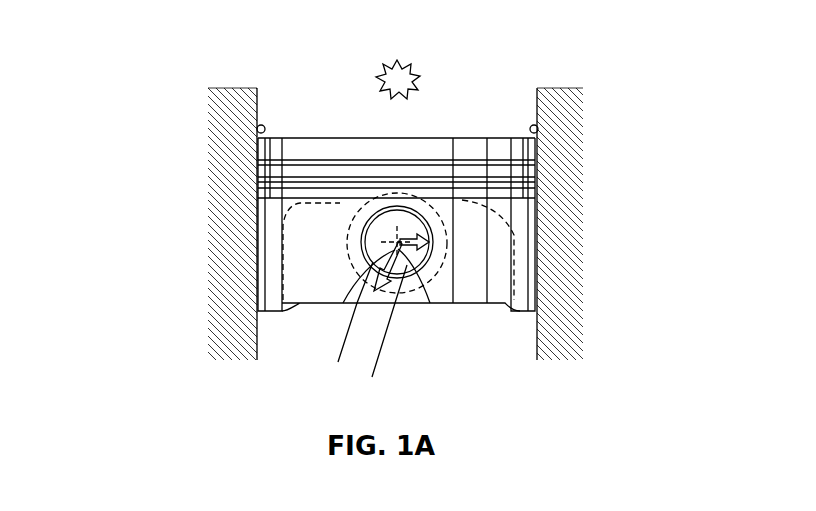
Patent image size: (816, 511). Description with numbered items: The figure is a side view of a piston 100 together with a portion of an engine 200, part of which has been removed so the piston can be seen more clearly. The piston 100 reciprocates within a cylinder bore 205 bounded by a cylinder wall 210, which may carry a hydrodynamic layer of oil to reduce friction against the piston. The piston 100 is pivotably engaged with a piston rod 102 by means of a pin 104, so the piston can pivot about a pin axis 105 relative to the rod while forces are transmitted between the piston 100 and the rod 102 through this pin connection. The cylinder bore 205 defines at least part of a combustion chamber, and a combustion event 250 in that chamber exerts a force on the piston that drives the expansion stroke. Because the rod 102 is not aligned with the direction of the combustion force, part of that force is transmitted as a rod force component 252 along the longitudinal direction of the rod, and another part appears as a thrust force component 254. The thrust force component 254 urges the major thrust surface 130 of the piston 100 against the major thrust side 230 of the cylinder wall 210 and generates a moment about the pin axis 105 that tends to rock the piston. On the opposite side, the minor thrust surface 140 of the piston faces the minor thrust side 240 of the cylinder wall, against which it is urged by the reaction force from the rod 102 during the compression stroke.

The piston 100 is at (320, 132).
The piston rod 102 is at (338, 357).
The pin 104 is at (398, 257).
The pin axis 105 is at (430, 303).
The major thrust surface 130 is at (464, 183).
The minor thrust surface 140 is at (208, 184).
The engine 200 is at (205, 215).
The cylinder bore 205 is at (268, 80).
The cylinder wall 210 is at (262, 99).
The major thrust side 230 is at (540, 126).
The minor thrust side 240 is at (256, 127).
The combustion event 250 is at (399, 63).
The rod force component 252 is at (343, 303).
The thrust force component 254 is at (409, 215).